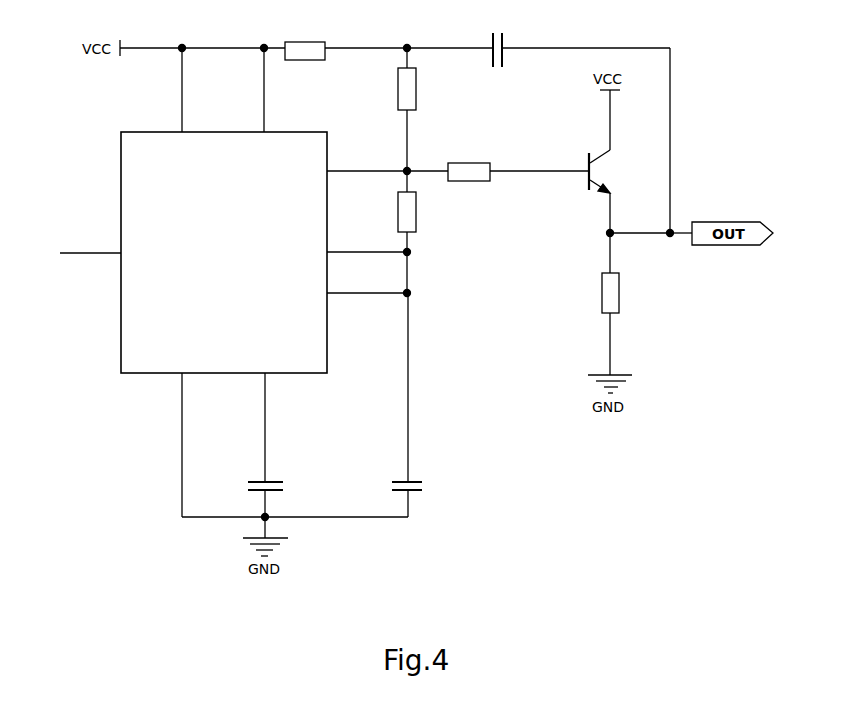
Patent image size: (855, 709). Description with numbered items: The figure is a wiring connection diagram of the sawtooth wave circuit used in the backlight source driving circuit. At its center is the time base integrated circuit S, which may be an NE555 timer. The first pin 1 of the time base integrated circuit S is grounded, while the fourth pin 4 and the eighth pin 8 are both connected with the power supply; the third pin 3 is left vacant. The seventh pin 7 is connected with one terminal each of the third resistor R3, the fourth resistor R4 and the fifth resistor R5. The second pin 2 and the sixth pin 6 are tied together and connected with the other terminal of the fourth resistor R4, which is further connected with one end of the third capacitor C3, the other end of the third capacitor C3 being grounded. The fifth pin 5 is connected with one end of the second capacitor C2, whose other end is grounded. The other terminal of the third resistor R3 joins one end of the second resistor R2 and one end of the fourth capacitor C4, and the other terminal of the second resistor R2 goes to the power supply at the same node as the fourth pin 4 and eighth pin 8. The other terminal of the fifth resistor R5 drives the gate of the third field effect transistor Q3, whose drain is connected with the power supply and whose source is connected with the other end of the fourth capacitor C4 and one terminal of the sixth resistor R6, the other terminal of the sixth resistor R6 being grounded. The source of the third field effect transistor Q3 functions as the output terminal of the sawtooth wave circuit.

The first pin 1 is at (171, 445).
The second pin 2 is at (367, 285).
The third pin 3 is at (90, 243).
The fourth pin 4 is at (171, 90).
The fifth pin 5 is at (253, 427).
The sixth pin 6 is at (367, 244).
The seventh pin 7 is at (387, 162).
The eighth pin 8 is at (253, 90).
The time base integrated circuit S is at (224, 252).
The second resistor R2 is at (346, 39).
The third resistor R3 is at (420, 109).
The fourth resistor R4 is at (420, 211).
The fifth resistor R5 is at (518, 160).
The sixth resistor R6 is at (623, 304).
The second capacitor C2 is at (278, 497).
The third capacitor C3 is at (420, 405).
The fourth capacitor C4 is at (538, 42).
The third field effect transistor Q3 is at (613, 161).